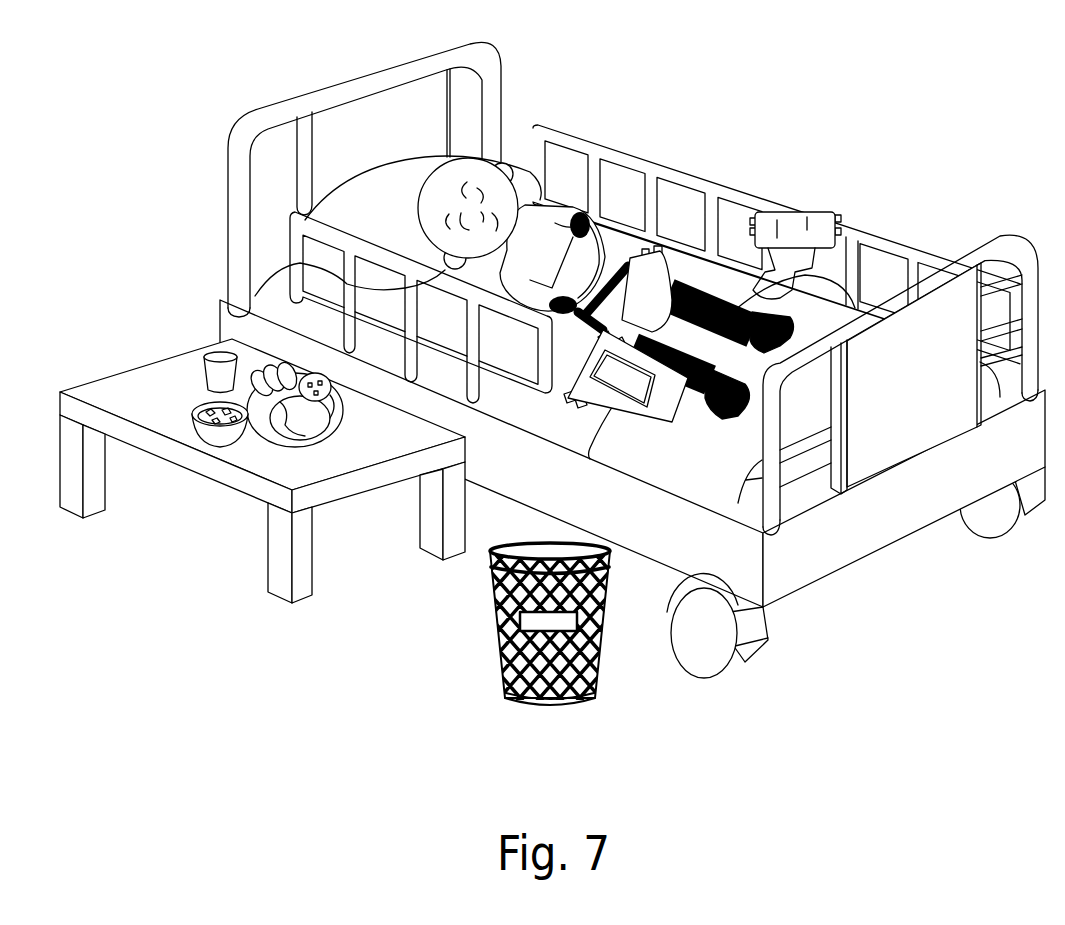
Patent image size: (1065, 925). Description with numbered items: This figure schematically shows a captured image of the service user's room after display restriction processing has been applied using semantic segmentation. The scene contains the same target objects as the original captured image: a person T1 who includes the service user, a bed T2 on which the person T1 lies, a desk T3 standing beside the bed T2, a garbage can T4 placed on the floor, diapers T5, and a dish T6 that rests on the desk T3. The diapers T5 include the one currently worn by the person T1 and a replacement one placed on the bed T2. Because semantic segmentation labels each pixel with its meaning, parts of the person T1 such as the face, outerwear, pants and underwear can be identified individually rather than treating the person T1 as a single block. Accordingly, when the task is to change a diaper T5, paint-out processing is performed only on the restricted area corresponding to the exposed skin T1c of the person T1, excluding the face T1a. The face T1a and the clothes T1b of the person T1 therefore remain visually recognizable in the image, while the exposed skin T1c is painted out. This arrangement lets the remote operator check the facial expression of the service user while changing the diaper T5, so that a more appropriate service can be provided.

The person T1 is at (399, 226).
The face T1a is at (430, 192).
The clothes T1b is at (566, 362).
The exposed skin T1c is at (707, 392).
The bed T2 is at (347, 97).
The desk T3 is at (147, 377).
The garbage can T4 is at (495, 628).
The diapers T5 is at (791, 217).
The dish T6 is at (353, 438).